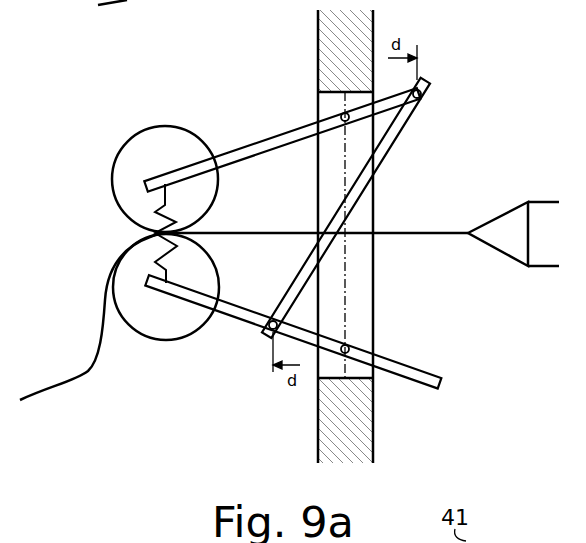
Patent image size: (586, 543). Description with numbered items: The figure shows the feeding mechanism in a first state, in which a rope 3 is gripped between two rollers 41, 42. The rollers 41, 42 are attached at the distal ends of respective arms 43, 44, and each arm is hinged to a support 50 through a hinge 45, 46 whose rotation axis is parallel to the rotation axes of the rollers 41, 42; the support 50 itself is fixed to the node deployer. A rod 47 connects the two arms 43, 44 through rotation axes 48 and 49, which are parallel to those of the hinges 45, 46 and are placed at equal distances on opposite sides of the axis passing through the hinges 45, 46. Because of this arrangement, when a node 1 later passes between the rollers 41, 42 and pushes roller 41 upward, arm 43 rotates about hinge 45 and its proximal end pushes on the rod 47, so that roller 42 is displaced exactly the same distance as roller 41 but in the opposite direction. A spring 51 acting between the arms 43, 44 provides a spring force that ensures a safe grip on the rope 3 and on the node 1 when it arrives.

The node 1 is at (545, 268).
The rope 3 is at (88, 362).
The roller 41 is at (147, 150).
The roller 42 is at (158, 328).
The arm 43 is at (263, 145).
The arm 44 is at (415, 360).
The hinge 45 is at (338, 112).
The hinge 46 is at (347, 343).
The rod 47 is at (392, 142).
The rotation axis 48 is at (266, 333).
The rotation axis 49 is at (418, 84).
The support 50 is at (316, 421).
The spring 51 is at (160, 225).